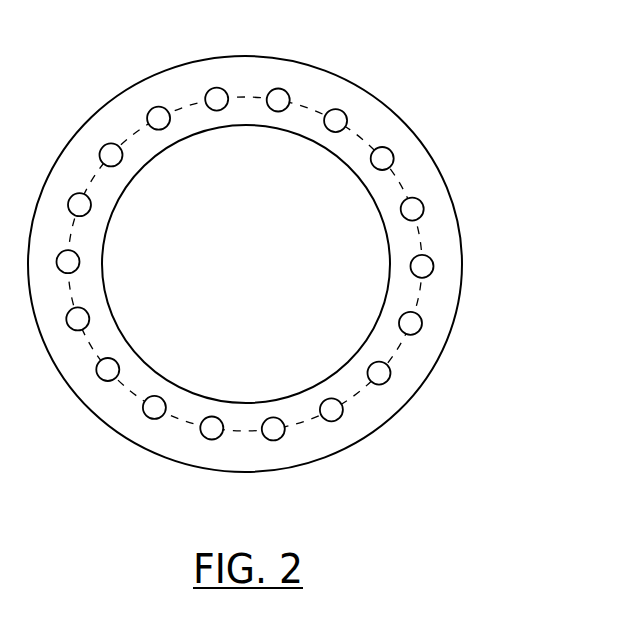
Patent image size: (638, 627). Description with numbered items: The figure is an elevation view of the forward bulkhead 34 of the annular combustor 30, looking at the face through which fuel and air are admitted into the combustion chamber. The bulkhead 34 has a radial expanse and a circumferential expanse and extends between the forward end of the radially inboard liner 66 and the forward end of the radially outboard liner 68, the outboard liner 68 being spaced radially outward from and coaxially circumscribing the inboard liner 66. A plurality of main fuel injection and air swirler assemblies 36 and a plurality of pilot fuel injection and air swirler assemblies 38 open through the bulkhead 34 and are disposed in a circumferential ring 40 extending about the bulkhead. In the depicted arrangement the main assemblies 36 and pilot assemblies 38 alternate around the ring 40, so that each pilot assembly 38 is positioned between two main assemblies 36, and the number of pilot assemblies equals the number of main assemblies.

The annular combustor 30 is at (279, 253).
The bulkhead 34 is at (246, 264).
The main fuel injection and air swirler assemblies 36 is at (220, 110).
The pilot fuel injection and air swirler assemblies 38 is at (282, 88).
The circumferential ring 40 is at (418, 226).
The radially inboard liner 66 is at (380, 226).
The radially outboard liner 68 is at (458, 302).